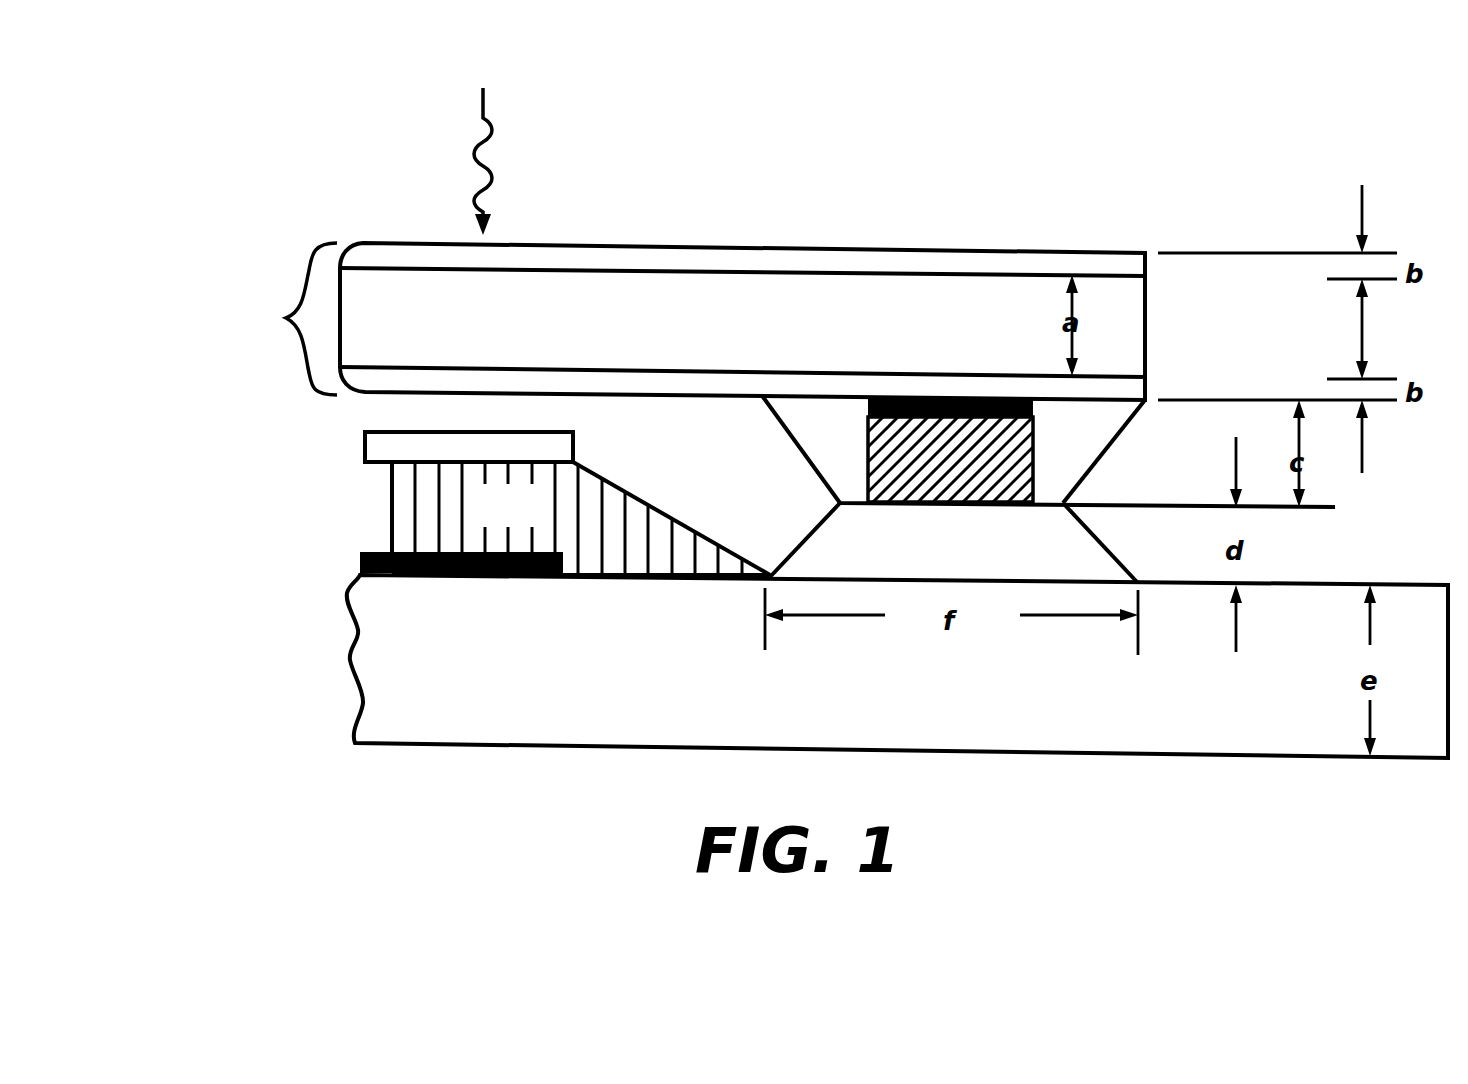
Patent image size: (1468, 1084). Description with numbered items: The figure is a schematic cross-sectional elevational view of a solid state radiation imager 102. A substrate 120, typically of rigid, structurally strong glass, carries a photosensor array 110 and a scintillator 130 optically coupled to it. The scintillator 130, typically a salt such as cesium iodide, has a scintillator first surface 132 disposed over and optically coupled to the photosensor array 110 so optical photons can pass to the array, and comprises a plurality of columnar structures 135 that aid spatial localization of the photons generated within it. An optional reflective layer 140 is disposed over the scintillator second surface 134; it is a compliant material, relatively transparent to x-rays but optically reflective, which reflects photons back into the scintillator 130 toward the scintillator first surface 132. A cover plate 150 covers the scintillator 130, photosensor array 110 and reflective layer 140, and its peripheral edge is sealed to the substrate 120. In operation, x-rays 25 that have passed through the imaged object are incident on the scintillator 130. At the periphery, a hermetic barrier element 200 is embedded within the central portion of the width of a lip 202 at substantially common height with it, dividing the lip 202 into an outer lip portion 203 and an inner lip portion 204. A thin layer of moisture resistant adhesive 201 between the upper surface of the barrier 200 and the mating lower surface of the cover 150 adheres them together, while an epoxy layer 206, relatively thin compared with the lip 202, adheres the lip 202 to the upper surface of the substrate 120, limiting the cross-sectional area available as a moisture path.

The x-rays 25 is at (510, 161).
The solid state radiation imager 102 is at (770, 220).
The cover plate 150 is at (286, 318).
The reflective layer 140 is at (365, 447).
The scintillator second surface 134 is at (382, 465).
The scintillator 130 is at (392, 507).
The scintillator first surface 132 is at (375, 552).
The columnar structures 135 is at (507, 503).
The photosensor array 110 is at (360, 554).
The substrate 120 is at (358, 632).
The hermetic barrier element 200 is at (868, 416).
The moisture resistant adhesive 201 is at (950, 397).
The lip 202 is at (1112, 448).
The outer lip portion 203 is at (1098, 451).
The inner lip portion 204 is at (858, 451).
The epoxy layer 206 is at (1070, 569).